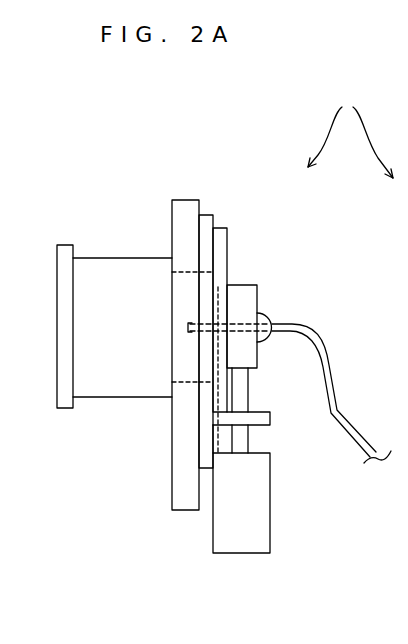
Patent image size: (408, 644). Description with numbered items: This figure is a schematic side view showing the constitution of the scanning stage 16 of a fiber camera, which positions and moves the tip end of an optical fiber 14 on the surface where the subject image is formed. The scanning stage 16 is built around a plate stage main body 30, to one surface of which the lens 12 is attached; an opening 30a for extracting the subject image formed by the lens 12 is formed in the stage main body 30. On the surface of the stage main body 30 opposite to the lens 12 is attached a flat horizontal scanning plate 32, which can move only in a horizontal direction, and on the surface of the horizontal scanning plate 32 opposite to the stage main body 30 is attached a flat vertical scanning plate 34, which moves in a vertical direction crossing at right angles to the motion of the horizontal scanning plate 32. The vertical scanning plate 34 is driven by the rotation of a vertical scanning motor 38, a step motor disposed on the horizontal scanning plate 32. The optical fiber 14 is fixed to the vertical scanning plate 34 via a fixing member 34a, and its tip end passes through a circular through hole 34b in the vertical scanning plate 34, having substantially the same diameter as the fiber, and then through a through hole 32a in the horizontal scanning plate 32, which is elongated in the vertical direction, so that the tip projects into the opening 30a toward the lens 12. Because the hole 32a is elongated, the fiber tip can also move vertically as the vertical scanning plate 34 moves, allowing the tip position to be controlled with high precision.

The lens 12 is at (118, 265).
The optical fiber 14 is at (341, 427).
The scanning stage 16 is at (375, 95).
The stage main body 30 is at (181, 205).
The opening 30a is at (183, 382).
The horizontal scanning plate 32 is at (208, 217).
The through hole 32a is at (204, 382).
The vertical scanning plate 34 is at (222, 240).
The fixing member 34a is at (407, 283).
The through hole 34b is at (218, 287).
The vertical scanning motor 38 is at (260, 540).